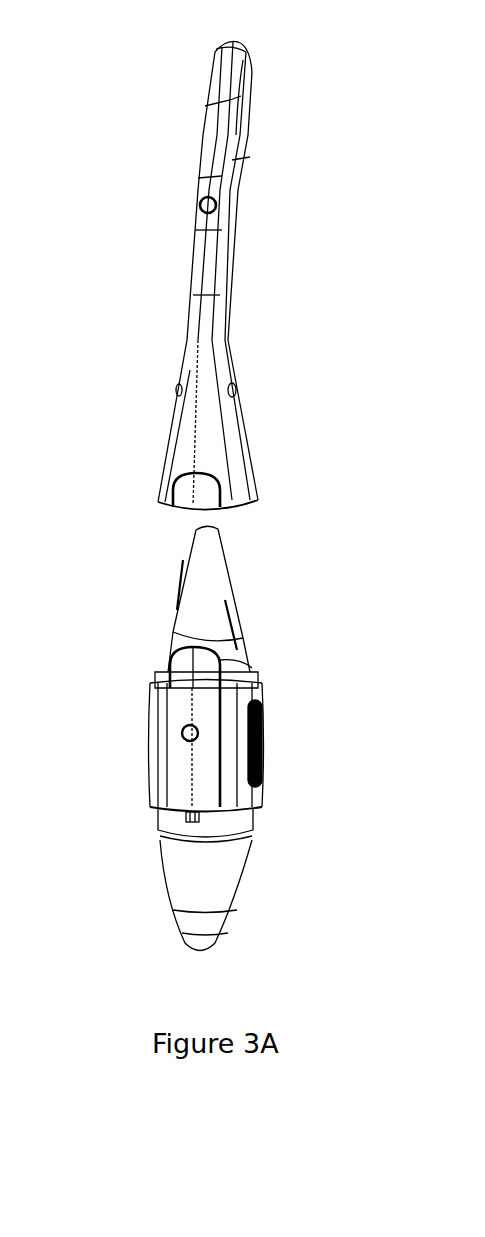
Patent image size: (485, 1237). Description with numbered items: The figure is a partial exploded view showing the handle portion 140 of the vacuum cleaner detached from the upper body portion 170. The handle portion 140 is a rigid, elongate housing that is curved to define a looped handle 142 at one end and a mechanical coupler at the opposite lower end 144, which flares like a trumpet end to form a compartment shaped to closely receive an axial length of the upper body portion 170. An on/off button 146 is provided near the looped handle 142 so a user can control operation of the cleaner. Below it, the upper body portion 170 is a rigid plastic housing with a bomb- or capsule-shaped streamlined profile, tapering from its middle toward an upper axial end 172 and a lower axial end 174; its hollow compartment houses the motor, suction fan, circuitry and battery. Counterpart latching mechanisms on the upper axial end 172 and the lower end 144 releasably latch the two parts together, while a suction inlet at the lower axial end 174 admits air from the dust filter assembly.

The handle portion 140 is at (303, 42).
The looped handle 142 is at (180, 127).
The lower end 144 is at (136, 447).
The on/off button 146 is at (200, 206).
The upper body portion 170 is at (303, 527).
The upper axial end 172 is at (141, 581).
The lower axial end 174 is at (130, 932).